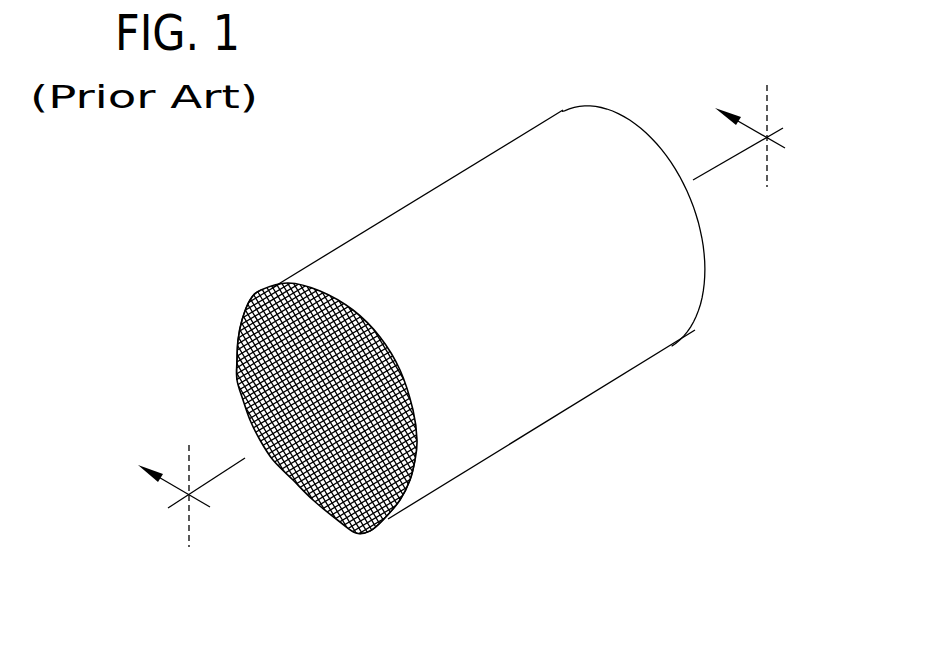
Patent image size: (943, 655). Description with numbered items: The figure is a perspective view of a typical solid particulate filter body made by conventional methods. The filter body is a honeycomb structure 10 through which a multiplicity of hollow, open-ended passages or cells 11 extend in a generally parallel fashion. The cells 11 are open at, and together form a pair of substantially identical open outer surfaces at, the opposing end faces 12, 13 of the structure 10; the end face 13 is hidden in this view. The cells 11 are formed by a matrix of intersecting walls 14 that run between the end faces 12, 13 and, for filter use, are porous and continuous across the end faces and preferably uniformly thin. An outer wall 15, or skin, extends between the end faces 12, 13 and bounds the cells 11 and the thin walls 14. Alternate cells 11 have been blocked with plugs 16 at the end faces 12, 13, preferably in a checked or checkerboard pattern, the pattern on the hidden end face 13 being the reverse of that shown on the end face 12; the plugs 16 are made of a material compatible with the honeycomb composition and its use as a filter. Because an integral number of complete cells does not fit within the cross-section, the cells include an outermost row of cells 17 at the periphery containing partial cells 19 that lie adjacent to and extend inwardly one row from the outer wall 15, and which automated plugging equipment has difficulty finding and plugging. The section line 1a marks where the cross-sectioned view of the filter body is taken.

The honeycomb structure 10 is at (370, 190).
The cells 11 is at (237, 323).
The end face 12 is at (238, 347).
The end face 13 is at (700, 237).
The walls 14 is at (412, 422).
The outer wall 15 is at (655, 308).
The plugs 16 is at (325, 293).
The outermost row of cells 17 is at (394, 552).
The partial cells 19 is at (415, 470).
The section line 1a- 1a is at (446, 314).